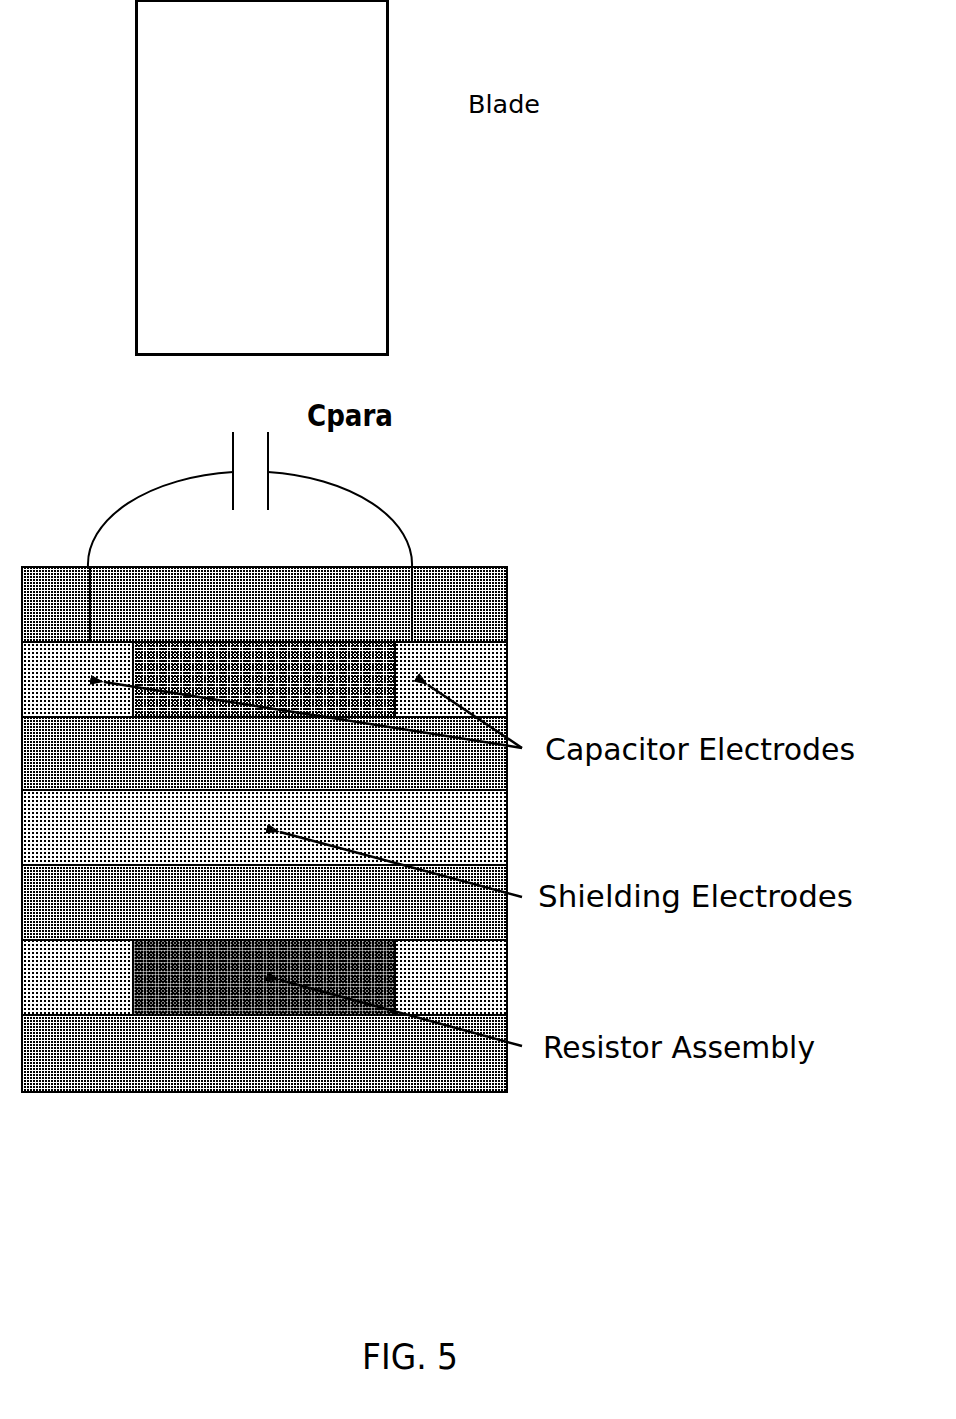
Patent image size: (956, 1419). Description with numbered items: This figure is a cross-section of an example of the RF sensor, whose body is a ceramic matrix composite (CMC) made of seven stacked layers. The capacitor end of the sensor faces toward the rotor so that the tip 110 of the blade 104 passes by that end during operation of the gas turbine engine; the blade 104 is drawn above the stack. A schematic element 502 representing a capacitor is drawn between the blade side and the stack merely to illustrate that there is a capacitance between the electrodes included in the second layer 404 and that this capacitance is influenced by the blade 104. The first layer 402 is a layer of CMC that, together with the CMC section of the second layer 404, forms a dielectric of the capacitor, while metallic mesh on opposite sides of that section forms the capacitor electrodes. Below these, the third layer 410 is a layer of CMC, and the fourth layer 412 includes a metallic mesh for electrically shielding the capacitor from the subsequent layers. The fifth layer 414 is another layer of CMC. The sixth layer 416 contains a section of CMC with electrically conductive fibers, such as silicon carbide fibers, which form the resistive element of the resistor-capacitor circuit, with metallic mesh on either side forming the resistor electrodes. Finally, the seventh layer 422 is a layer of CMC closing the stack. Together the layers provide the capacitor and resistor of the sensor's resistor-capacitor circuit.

The blade 104 is at (387, 114).
The tip 110 is at (142, 356).
The schematic element 502 is at (204, 474).
The first layer 402 is at (532, 605).
The second layer 404 is at (532, 685).
The third layer 410 is at (520, 777).
The fourth layer 412 is at (516, 833).
The fifth layer 414 is at (524, 925).
The sixth layer 416 is at (516, 982).
The seventh layer 422 is at (516, 1073).